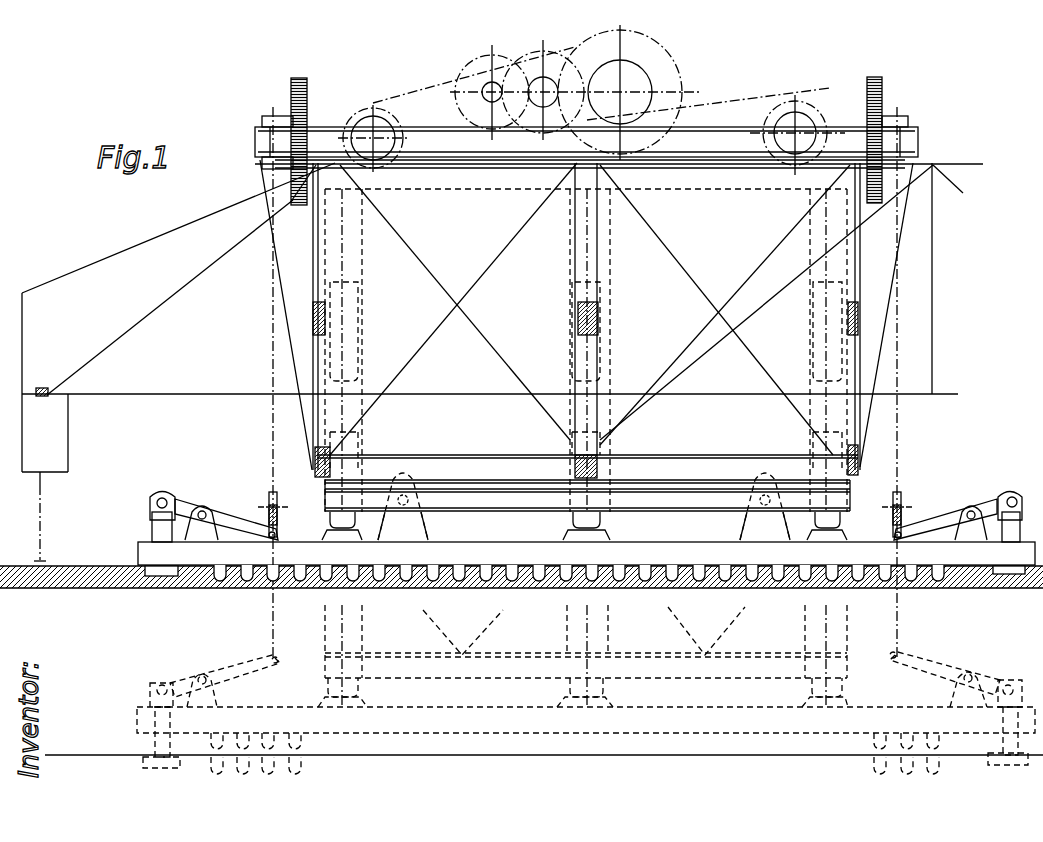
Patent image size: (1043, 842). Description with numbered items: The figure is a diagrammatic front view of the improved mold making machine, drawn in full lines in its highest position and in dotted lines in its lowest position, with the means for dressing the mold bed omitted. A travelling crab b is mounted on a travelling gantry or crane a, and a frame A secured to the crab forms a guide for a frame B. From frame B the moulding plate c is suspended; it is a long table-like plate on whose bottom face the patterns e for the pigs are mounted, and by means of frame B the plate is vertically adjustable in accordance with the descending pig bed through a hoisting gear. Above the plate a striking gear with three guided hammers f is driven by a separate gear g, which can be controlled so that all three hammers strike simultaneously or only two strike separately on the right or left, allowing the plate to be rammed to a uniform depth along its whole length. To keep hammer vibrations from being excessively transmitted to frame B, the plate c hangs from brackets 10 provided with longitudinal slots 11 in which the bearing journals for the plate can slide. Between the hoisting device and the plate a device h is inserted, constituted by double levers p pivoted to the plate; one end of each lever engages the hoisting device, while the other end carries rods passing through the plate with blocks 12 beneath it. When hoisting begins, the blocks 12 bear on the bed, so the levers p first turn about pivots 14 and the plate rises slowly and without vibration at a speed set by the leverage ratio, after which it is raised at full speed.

The travelling gantry a is at (490, 362).
The travelling crab b is at (720, 137).
The moulding plate c is at (586, 554).
The patterns e is at (777, 578).
The guided hammers f is at (572, 518).
The gear g is at (620, 92).
The device for raising the plate h is at (183, 508).
The double levers p is at (235, 523).
The frame A is at (883, 298).
The frame B is at (858, 467).
The brackets 10 is at (417, 529).
The longitudinal slots 11 is at (413, 490).
The blocks 12 is at (1003, 573).
The pivots 14 is at (1017, 495).